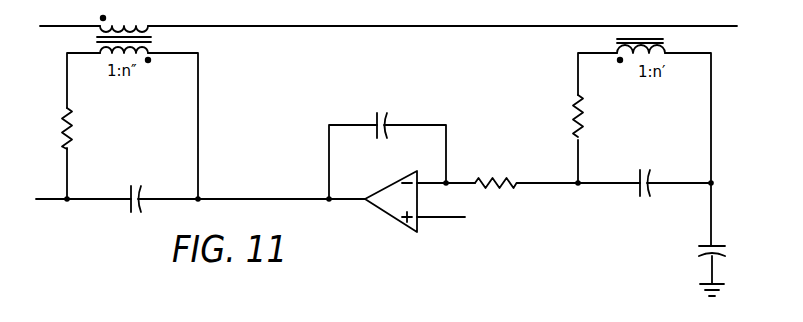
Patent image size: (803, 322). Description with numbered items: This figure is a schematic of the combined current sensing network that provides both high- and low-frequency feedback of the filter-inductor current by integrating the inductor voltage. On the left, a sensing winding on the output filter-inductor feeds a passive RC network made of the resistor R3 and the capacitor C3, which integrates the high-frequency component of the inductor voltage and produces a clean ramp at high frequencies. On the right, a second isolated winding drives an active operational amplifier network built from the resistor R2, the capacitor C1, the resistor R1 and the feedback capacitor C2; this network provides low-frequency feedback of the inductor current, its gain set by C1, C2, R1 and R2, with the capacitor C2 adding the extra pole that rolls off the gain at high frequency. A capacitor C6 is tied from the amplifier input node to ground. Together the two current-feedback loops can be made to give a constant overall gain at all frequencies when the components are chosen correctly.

The resistor R1 is at (496, 171).
The resistor R2 is at (589, 116).
The resistor R3 is at (78, 128).
The capacitor C1 is at (649, 173).
The capacitor C2 is at (384, 115).
The capacitor C3 is at (140, 187).
The capacitor C6 is at (722, 264).